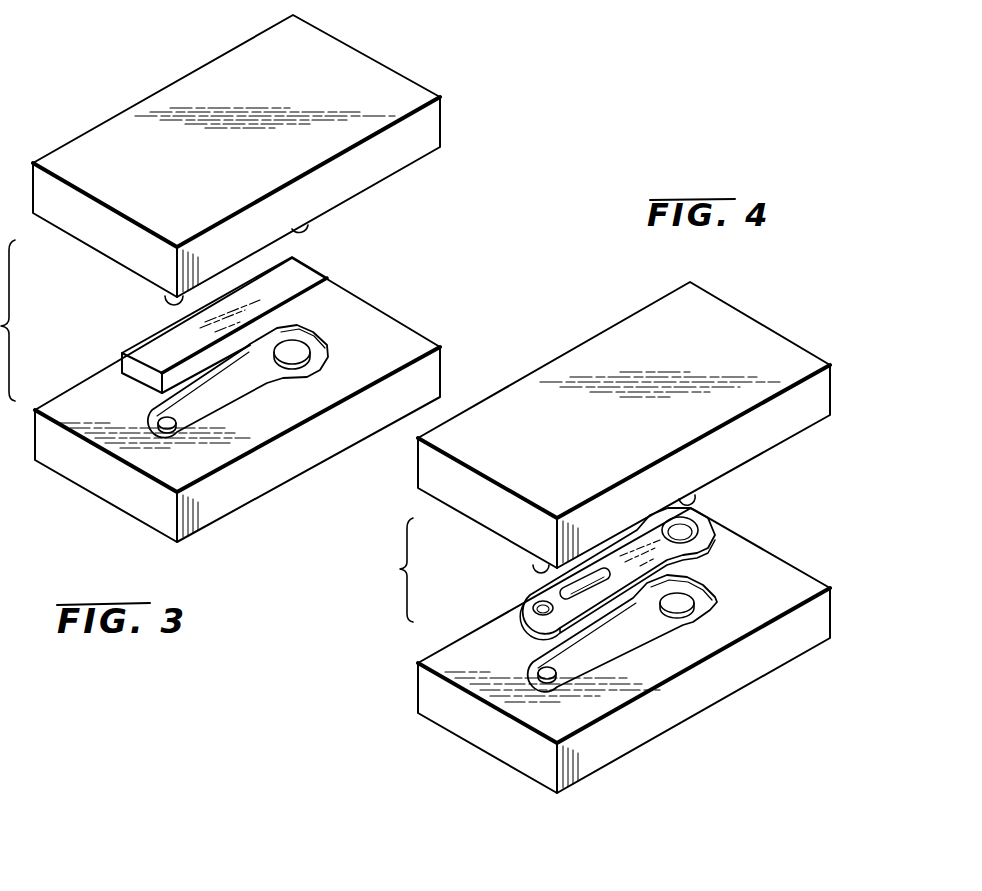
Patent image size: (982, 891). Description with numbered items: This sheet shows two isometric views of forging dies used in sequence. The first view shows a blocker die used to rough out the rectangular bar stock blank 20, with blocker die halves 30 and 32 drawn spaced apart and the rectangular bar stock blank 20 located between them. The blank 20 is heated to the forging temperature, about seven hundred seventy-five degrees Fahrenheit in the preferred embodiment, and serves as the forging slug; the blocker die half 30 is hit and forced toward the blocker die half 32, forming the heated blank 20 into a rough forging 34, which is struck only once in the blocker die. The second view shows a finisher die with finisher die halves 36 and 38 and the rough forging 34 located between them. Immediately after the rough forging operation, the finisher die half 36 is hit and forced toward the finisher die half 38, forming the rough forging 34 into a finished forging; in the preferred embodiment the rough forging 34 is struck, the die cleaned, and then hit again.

In FIG. 3, the rectangular bar stock blank 20 is at (326, 274).
In FIG. 3, the blocker die half 30 is at (407, 88).
In FIG. 3, the blocker die half 32 is at (122, 503).
In FIG. 4, the rough forging 34 is at (716, 530).
In FIG. 4, the finisher die half 36 is at (684, 300).
In FIG. 4, the finisher die half 38 is at (430, 712).